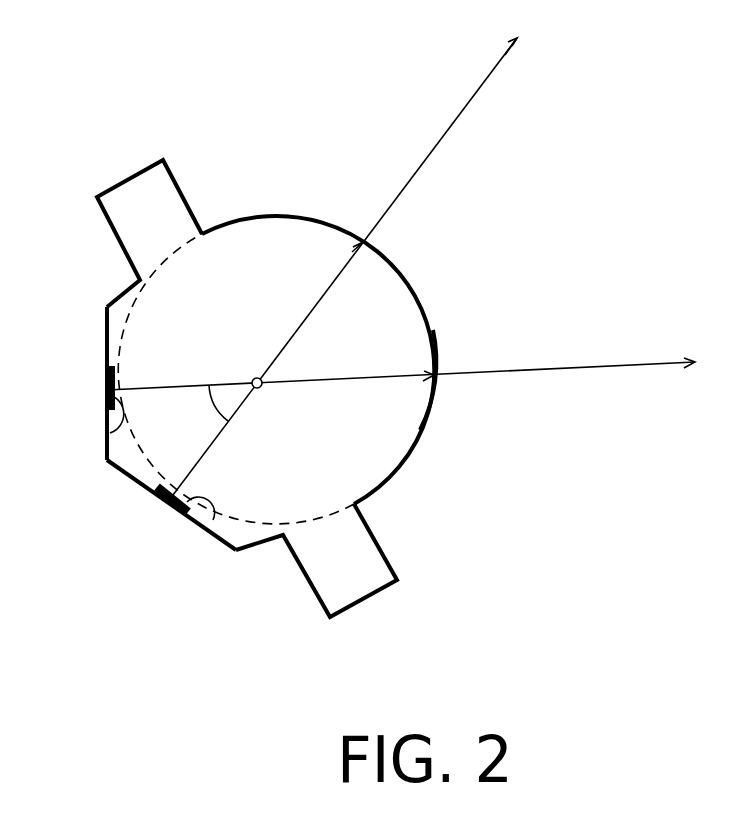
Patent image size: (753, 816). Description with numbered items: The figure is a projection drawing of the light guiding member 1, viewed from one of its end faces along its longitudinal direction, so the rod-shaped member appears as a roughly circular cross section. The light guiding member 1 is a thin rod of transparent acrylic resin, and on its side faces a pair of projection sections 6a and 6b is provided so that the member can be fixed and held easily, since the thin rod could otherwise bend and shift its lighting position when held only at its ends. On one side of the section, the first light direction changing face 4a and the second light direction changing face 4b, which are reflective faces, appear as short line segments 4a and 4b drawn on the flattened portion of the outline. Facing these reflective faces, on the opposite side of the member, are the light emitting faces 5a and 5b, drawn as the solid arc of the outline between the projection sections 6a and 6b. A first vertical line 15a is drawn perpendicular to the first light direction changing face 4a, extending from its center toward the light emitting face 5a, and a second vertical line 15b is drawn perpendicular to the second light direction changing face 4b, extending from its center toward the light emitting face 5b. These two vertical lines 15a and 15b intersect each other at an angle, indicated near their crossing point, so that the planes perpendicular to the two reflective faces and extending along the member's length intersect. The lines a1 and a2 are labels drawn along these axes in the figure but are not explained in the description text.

The light guiding member 1 is at (70, 537).
The first light direction changing face 4a is at (203, 525).
The second light direction changing face 4b is at (130, 430).
The light emitting face 5a is at (323, 218).
The light emitting face 5b is at (432, 412).
The projection section 6a is at (128, 175).
The projection section 6b is at (357, 603).
The first optical axis a1 is at (307, 313).
The second optical axis a2 is at (455, 120).
The first vertical line 15a is at (500, 94).
The second vertical line 15b is at (624, 382).